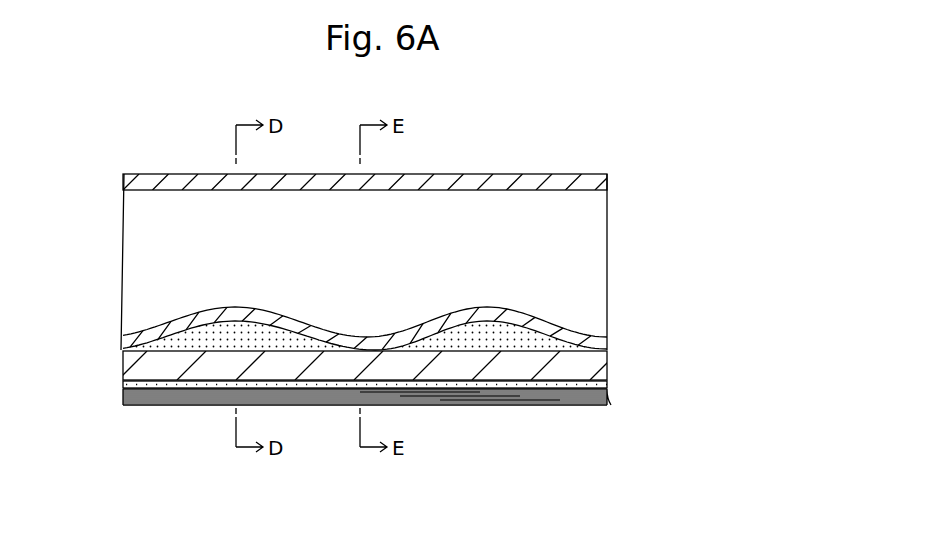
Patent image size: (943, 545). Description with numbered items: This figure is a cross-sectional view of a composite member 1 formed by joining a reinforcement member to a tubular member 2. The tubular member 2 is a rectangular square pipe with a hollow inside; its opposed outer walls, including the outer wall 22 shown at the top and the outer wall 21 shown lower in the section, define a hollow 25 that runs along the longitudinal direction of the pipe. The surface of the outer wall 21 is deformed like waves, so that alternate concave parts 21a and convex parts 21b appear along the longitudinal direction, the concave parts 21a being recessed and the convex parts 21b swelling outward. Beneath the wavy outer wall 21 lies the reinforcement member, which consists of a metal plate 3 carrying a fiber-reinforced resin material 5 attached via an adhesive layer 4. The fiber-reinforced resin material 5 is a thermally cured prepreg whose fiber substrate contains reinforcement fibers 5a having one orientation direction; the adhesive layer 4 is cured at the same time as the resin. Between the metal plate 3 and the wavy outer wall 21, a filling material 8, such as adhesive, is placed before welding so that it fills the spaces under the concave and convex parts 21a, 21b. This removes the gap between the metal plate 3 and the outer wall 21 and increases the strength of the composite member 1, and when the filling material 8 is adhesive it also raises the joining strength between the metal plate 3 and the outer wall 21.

The composite member 1 is at (645, 115).
The tubular member 2 is at (553, 186).
The outer wall 22 is at (492, 186).
The hollow 25 is at (583, 221).
The outer wall 21 is at (396, 310).
The concave part 21a is at (237, 318).
The convex part 21b is at (367, 345).
The filling material 8 is at (528, 340).
The metal plate 3 is at (130, 358).
The adhesive layer 4 is at (123, 388).
The fiber-reinforced resin material 5 is at (577, 390).
The reinforcement fibers 5a is at (504, 400).